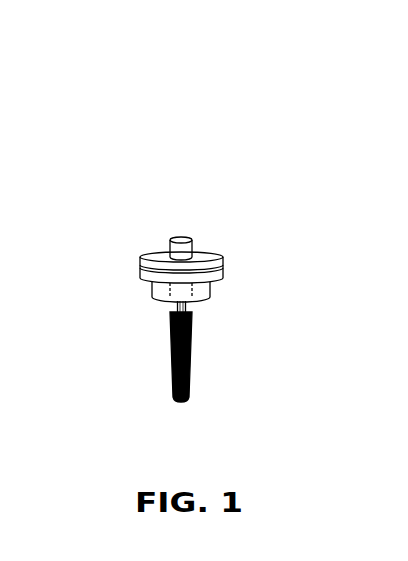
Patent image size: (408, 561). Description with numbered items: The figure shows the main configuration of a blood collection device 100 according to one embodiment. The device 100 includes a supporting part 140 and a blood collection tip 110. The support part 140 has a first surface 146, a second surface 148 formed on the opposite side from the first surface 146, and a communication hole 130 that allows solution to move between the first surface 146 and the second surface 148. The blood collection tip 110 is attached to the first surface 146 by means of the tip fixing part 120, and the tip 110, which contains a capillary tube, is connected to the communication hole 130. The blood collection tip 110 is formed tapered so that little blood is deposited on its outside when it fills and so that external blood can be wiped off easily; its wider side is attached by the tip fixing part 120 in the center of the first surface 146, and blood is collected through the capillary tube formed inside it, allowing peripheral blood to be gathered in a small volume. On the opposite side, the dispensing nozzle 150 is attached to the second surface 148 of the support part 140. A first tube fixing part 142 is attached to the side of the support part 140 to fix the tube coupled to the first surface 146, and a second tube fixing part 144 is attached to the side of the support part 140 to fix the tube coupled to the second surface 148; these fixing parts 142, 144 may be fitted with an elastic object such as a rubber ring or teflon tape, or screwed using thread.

The blood collection device 100 is at (142, 161).
The blood collection tip 110 is at (192, 368).
The tip fixing part 120 is at (168, 307).
The communication hole 130 is at (187, 294).
The supporting part 140 is at (300, 223).
The first tube fixing part 142 is at (211, 287).
The second tube fixing part 144 is at (247, 242).
The first surface 146 is at (223, 279).
The second surface 148 is at (223, 266).
The dispensing nozzle 150 is at (181, 247).